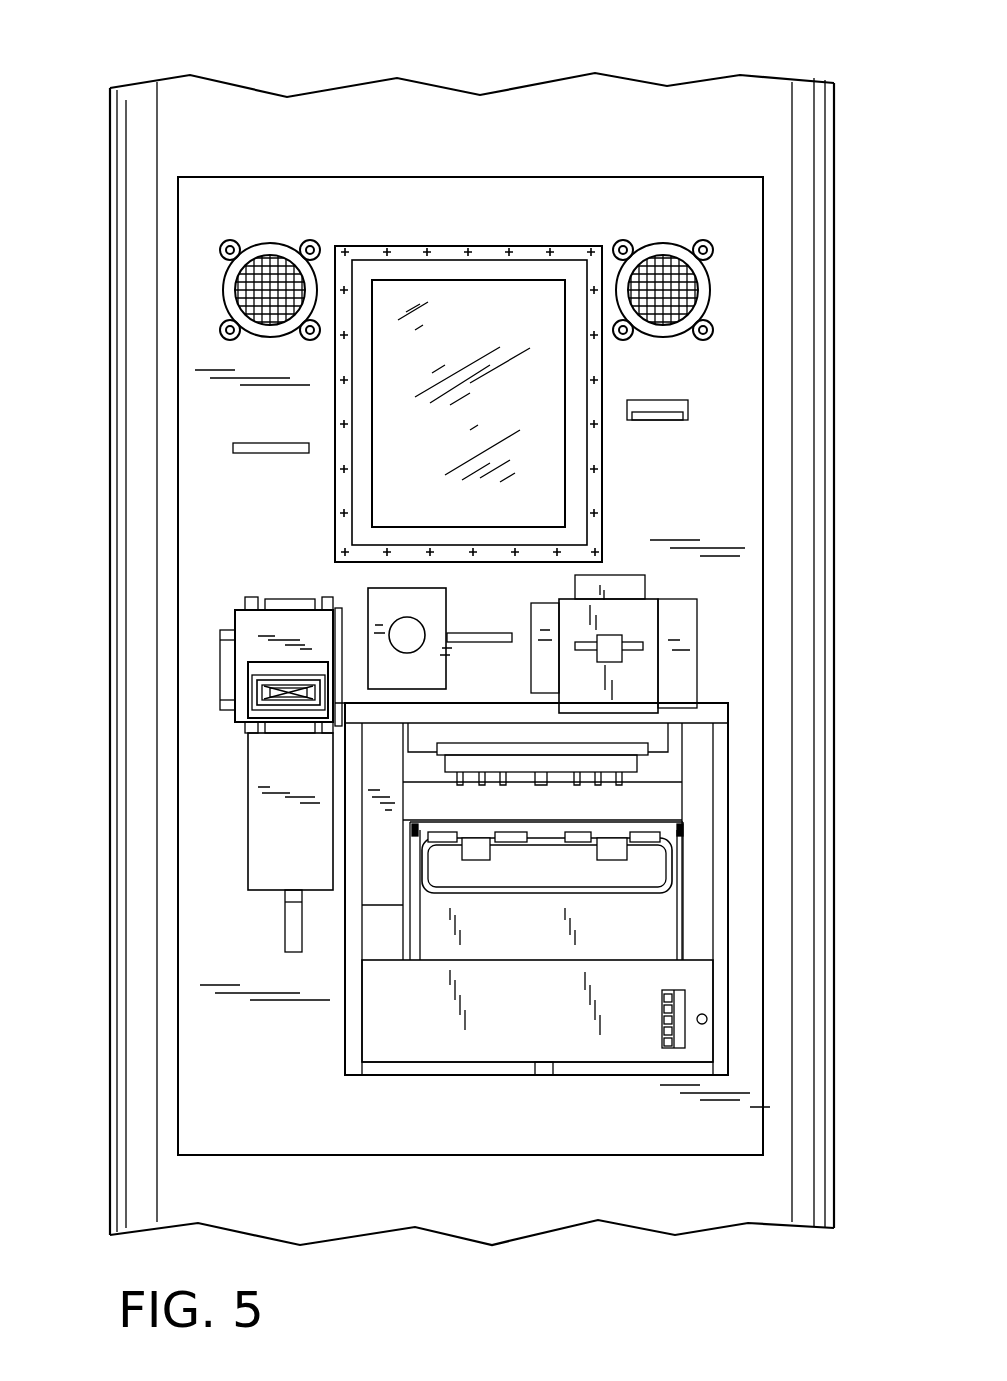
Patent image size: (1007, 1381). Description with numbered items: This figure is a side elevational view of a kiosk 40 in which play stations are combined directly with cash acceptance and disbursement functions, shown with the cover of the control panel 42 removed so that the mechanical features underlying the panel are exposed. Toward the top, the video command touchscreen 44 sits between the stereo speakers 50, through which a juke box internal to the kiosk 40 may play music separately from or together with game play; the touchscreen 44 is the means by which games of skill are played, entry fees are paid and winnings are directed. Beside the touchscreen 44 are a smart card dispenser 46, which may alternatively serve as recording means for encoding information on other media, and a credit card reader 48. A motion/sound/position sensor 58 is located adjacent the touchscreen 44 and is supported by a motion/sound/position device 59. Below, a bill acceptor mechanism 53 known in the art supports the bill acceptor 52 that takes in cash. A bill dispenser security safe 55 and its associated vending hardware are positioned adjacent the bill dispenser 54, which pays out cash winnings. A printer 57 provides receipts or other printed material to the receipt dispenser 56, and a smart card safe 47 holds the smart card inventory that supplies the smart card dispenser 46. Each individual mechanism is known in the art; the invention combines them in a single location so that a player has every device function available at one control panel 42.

The kiosk 40 is at (642, 66).
The control panel 42 is at (800, 539).
The video command touchscreen 44 is at (522, 500).
The smart card dispenser 46 is at (246, 443).
The smart card safe 47 is at (698, 978).
The credit card reader 48 is at (688, 418).
The stereo speakers 50 is at (255, 290).
The bill acceptor 52 is at (257, 690).
The bill acceptor mechanism 53 is at (262, 630).
The bill dispenser 54 is at (700, 855).
The bill dispenser security safe 55 is at (662, 800).
The receipt (printer) dispenser 56 is at (645, 643).
The printer 57 is at (640, 695).
The motion/sound/position sensor 58 is at (395, 622).
The motion/sound/position device 59 is at (433, 667).